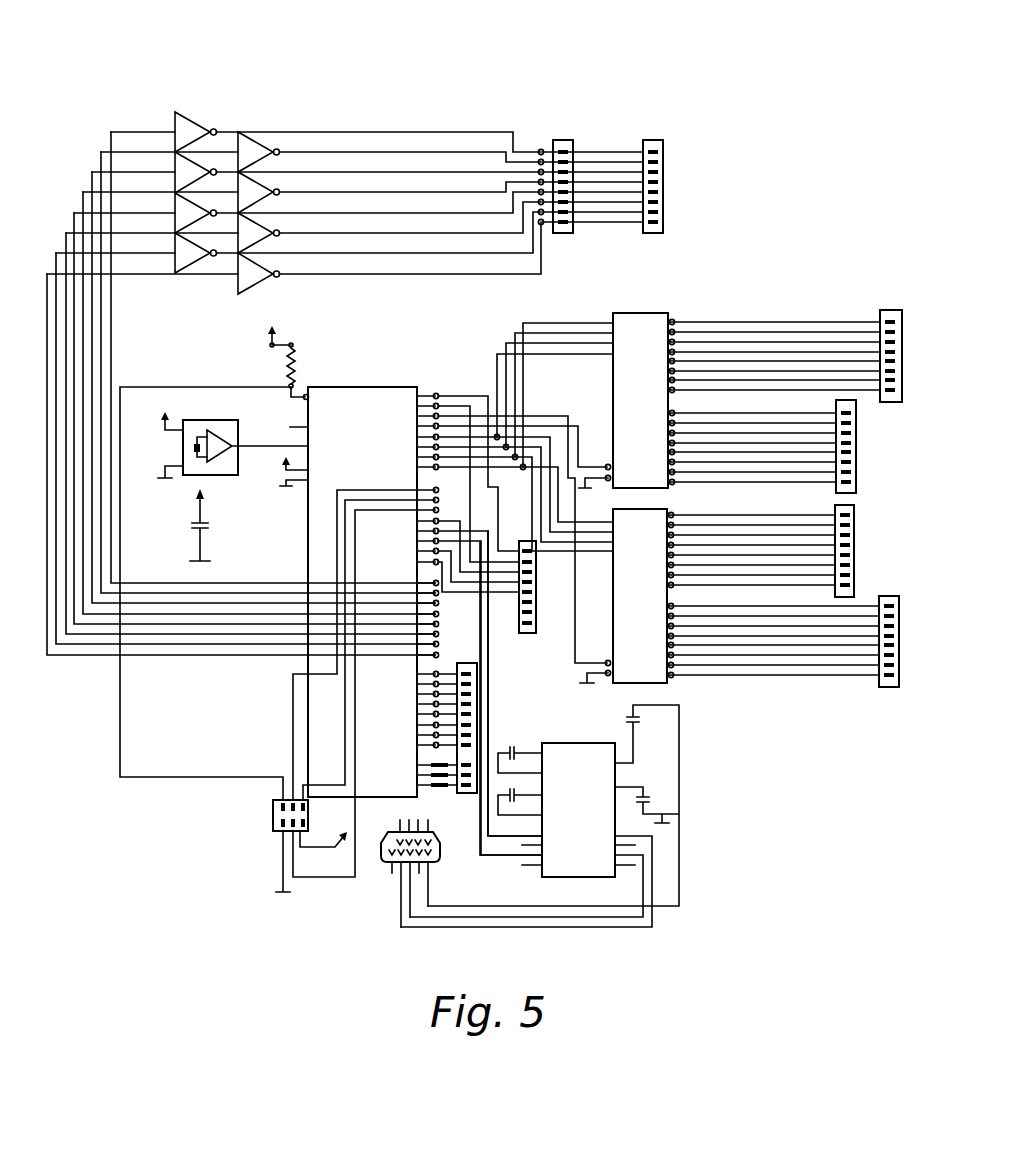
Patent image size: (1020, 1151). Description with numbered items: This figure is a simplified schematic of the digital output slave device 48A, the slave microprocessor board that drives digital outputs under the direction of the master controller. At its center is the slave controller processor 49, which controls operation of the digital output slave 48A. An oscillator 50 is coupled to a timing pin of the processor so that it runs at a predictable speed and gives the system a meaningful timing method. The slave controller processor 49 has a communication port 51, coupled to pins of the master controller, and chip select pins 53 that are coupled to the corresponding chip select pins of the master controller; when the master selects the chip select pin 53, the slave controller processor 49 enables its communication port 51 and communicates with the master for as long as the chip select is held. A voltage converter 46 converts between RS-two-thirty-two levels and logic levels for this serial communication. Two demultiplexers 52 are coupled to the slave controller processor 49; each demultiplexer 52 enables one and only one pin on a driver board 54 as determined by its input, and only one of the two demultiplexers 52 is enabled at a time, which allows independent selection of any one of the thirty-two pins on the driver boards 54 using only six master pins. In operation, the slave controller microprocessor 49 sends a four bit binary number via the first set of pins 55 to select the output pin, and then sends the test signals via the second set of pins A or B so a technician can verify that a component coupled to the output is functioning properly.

The digital output slave device 48A is at (745, 76).
The voltage converter 46 is at (583, 743).
The slave controller processor 49 is at (368, 386).
The oscillator 50 is at (212, 419).
The communication port 51 is at (373, 865).
The demultiplexer 52 is at (647, 313).
The chip select pins 53 is at (536, 632).
The driver board 54 is at (903, 345).
The first set of pins 55 is at (414, 390).
The second set of pins A is at (571, 140).
The second set of pins B is at (656, 140).